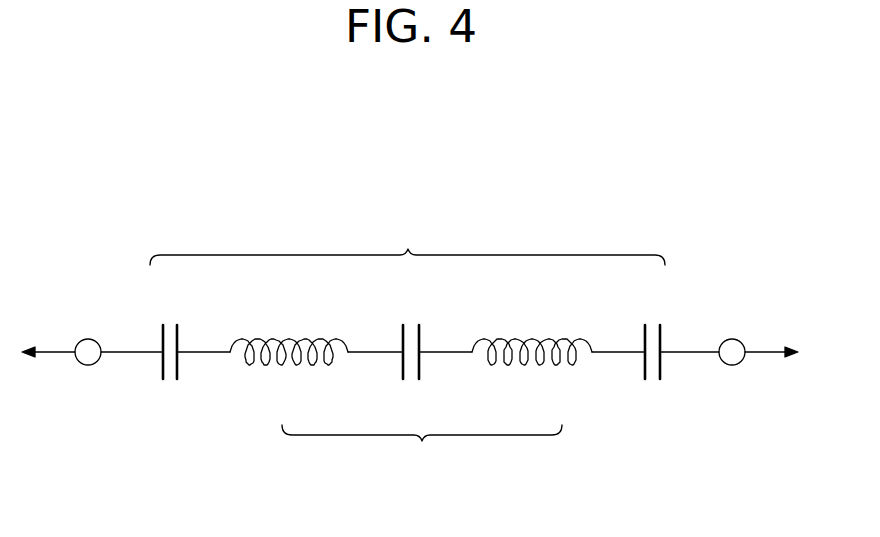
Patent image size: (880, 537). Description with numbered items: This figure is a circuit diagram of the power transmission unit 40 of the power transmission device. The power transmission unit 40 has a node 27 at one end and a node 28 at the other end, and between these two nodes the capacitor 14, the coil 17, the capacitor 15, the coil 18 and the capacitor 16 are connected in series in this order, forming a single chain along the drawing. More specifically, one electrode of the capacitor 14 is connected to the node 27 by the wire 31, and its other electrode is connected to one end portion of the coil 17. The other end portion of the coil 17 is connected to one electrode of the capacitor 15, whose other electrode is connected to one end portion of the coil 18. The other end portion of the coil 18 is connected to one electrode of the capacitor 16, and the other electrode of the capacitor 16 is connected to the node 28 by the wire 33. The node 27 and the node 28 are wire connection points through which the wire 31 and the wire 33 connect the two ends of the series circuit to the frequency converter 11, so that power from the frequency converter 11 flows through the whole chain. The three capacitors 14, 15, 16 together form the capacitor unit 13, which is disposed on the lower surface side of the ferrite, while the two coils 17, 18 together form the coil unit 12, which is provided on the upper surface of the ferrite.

The power transmission unit 40 is at (275, 222).
The frequency converter 11 is at (409, 337).
The node 27 is at (88, 365).
The node 28 is at (732, 365).
The wire 31 is at (128, 353).
The wire 33 is at (692, 353).
The capacitor unit 13 is at (407, 243).
The capacitor 14 is at (172, 324).
The capacitor 15 is at (412, 326).
The capacitor 16 is at (657, 326).
The coil unit 12 is at (422, 450).
The coil 17 is at (297, 364).
The coil 18 is at (540, 363).